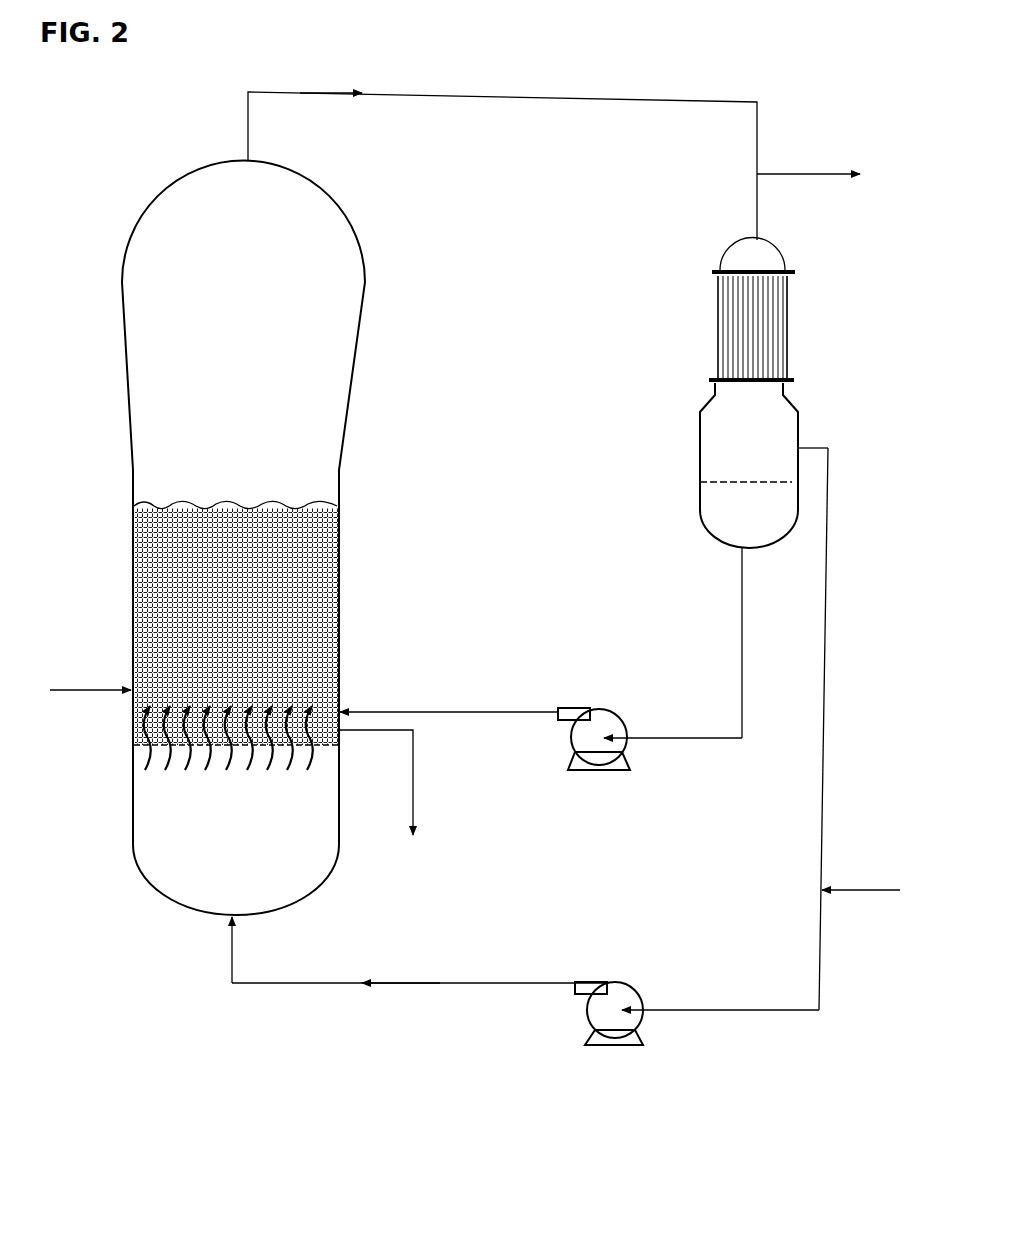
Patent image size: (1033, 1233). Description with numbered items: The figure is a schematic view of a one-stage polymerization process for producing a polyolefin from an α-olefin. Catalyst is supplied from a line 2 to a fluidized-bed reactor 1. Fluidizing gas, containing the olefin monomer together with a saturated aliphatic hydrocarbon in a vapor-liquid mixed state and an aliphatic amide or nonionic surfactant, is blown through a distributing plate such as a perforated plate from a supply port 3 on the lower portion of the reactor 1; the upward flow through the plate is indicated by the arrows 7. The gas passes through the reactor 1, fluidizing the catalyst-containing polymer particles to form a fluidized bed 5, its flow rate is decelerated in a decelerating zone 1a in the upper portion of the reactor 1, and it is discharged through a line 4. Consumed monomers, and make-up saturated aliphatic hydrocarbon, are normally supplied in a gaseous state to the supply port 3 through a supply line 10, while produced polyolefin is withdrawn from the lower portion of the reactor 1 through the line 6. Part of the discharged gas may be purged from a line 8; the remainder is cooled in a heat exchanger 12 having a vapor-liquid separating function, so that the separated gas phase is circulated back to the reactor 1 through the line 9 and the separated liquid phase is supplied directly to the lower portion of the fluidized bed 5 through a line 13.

The fluidized-bed reactor 1 is at (138, 208).
The decelerating zone 1a is at (264, 296).
The line 2 is at (86, 690).
The supply port 3 is at (226, 960).
The line 4 is at (238, 118).
The fluidized bed 5 is at (312, 566).
The line 6 is at (415, 788).
The gas distributor flow arrows 7 is at (243, 752).
The line 8 is at (805, 174).
The line 9 is at (310, 985).
The supply line 10 is at (874, 890).
The heat exchanger 12 is at (788, 322).
The line 13 is at (488, 711).